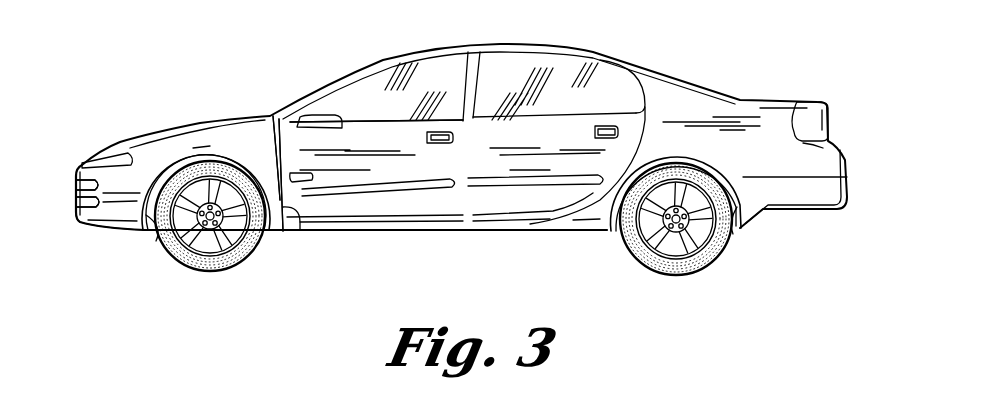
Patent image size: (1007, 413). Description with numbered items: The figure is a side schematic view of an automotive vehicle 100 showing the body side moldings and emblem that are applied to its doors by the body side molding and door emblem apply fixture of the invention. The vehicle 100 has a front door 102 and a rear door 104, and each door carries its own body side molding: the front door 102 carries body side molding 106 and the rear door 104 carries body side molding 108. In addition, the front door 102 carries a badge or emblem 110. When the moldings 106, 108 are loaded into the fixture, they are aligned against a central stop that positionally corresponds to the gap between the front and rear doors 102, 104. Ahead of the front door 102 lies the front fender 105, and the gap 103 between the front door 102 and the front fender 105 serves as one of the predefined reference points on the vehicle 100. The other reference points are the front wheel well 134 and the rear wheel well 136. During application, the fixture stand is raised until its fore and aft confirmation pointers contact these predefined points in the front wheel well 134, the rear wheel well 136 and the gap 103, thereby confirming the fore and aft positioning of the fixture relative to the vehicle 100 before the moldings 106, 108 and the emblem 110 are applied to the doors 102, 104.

The automotive vehicle 100 is at (763, 100).
The front door 102 is at (399, 222).
The gap 103 is at (301, 224).
The rear door 104 is at (519, 222).
The front fender 105 is at (115, 208).
The body side molding 106 is at (372, 178).
The body side molding 108 is at (553, 176).
The badge or emblem 110 is at (300, 170).
The front wheel well 134 is at (158, 247).
The rear wheel well 136 is at (727, 250).